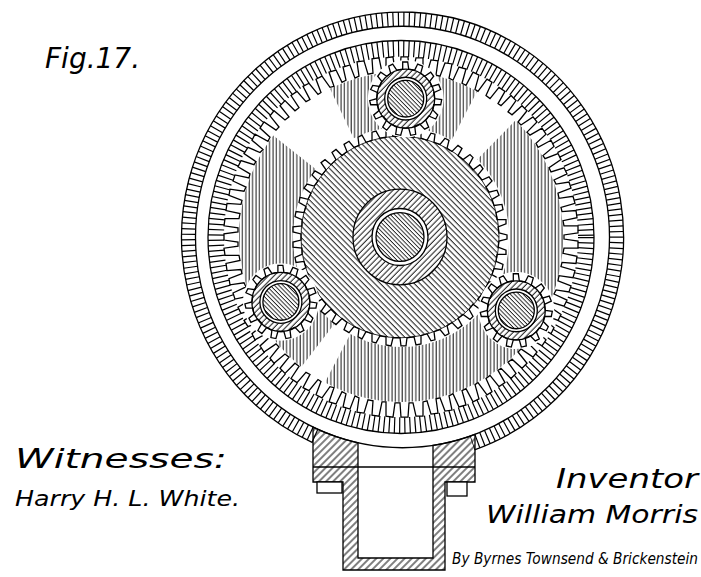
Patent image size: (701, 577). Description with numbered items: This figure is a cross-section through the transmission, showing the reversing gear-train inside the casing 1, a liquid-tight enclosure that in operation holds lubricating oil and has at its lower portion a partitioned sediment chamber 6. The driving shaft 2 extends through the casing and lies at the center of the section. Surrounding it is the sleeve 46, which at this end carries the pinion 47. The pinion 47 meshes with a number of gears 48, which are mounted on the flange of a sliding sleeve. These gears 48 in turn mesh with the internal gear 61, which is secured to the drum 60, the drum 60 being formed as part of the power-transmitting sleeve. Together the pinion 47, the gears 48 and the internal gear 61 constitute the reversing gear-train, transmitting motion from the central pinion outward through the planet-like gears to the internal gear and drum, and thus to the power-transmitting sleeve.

The casing 1 is at (583, 108).
The drum 60 is at (529, 90).
The internal gear 61 is at (401, 237).
The sleeve 46 is at (390, 284).
The pinion 47 is at (499, 254).
The driving shaft 2 is at (416, 232).
The gears 48 is at (428, 118).
The sediment chamber 6 is at (346, 515).